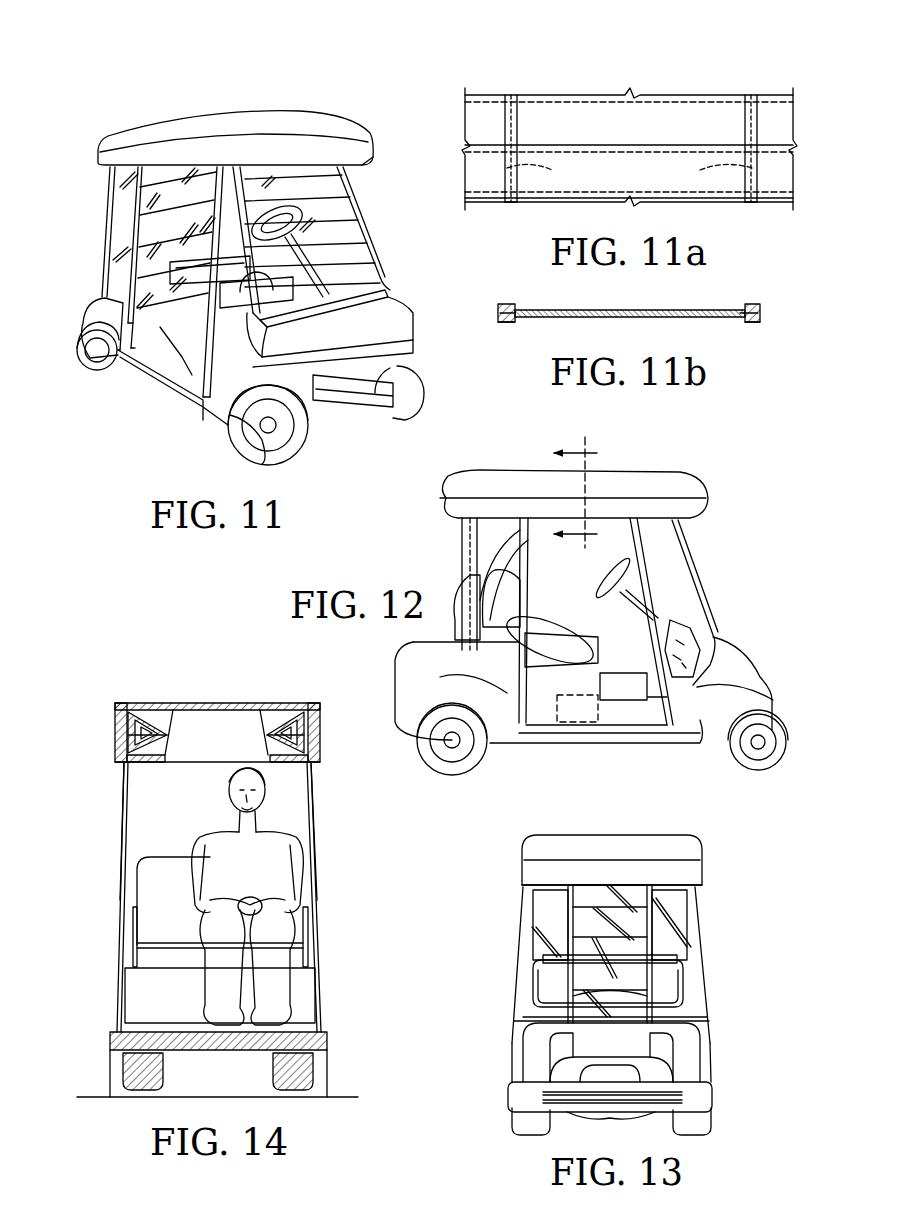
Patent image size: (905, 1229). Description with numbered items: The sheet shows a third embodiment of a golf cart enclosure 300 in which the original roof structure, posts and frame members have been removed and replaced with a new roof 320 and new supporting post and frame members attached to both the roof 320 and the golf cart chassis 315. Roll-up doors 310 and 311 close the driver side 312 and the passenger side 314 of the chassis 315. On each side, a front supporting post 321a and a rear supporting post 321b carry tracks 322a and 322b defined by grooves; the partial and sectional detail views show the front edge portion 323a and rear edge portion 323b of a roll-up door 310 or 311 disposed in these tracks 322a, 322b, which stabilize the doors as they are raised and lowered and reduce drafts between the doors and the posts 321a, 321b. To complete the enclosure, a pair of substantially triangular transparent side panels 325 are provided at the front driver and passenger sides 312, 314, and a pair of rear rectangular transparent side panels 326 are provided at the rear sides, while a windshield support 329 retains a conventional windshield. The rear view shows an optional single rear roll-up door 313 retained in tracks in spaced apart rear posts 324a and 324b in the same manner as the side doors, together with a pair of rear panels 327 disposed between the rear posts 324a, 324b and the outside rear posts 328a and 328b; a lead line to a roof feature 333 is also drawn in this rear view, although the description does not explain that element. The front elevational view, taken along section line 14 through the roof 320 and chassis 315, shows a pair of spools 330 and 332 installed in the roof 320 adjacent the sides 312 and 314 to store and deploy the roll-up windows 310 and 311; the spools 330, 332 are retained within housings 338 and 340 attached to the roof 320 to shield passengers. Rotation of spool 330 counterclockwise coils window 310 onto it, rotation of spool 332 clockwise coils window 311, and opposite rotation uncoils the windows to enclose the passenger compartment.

In FIG. 11, the golf cart enclosure 300 is at (374, 157).
In FIG. 14, the golf cart enclosure 300 is at (213, 702).
In FIG. 11, the roll-up door 310 is at (337, 222).
In FIG. 11A, the roll-up door 310 is at (585, 137).
In FIG. 11B, the roll-up door 310 is at (672, 309).
In FIG. 14, the roll-up door 310 is at (321, 822).
In FIG. 11, the roll-up door 311 is at (192, 375).
In FIG. 14, the roll-up door 311 is at (118, 936).
In FIG. 11, the driver side 312 is at (364, 289).
In FIG. 14, the driver side 312 is at (320, 872).
In FIG. 13, the rear roll-up door 313 is at (585, 892).
In FIG. 11, the passenger side 314 is at (210, 399).
In FIG. 14, the passenger side 314 is at (118, 882).
In FIG. 11, the golf cart chassis 315 is at (357, 321).
In FIG. 14, the golf cart chassis 315 is at (330, 1040).
In FIG. 11, the roof 320 is at (268, 140).
In FIG. 12, the roof 320 is at (484, 492).
In FIG. 13, the roof 320 is at (594, 856).
In FIG. 14, the roof 320 is at (250, 702).
In FIG. 11, the front supporting post 321a is at (362, 263).
In FIG. 11A, the front supporting post 321a is at (750, 92).
In FIG. 11B, the front supporting post 321a is at (762, 322).
In FIG. 12, the front supporting post 321a is at (640, 540).
In FIG. 11, the rear supporting post 321b is at (110, 178).
In FIG. 11A, the rear supporting post 321b is at (511, 92).
In FIG. 11B, the rear supporting post 321b is at (508, 322).
In FIG. 12, the rear supporting post 321b is at (530, 534).
In FIG. 11, the track 322a is at (182, 357).
In FIG. 11A, the track 322a is at (752, 205).
In FIG. 11B, the track 322a is at (505, 304).
In FIG. 11, the track 322b is at (160, 327).
In FIG. 11A, the track 322b is at (508, 205).
In FIG. 11A, the front edge portion 323a is at (704, 170).
In FIG. 11B, the front edge portion 323a is at (745, 318).
In FIG. 11A, the rear edge portion 323b is at (550, 170).
In FIG. 11B, the rear edge portion 323b is at (498, 313).
In FIG. 13, the rear post 324a is at (650, 901).
In FIG. 13, the rear post 324b is at (573, 918).
In FIG. 11, the triangular transparent side panel 325 is at (357, 218).
In FIG. 11, the rear rectangular transparent side panel 326 is at (242, 183).
In FIG. 11A, the rear panel 327 is at (465, 110).
In FIG. 13, the rear panel 327 is at (530, 971).
In FIG. 13, the outside rear post 328a is at (523, 999).
In FIG. 13, the outside rear post 328b is at (703, 1011).
In FIG. 11, the windshield support 329 is at (374, 188).
In FIG. 14, the spool 330 is at (287, 750).
In FIG. 14, the spool 332 is at (148, 750).
In FIG. 13, the roof lower surface 333 is at (545, 870).
In FIG. 14, the housing 338 is at (262, 740).
In FIG. 14, the housing 340 is at (163, 755).
In FIG. 12, the section line 14- 14 is at (581, 495).